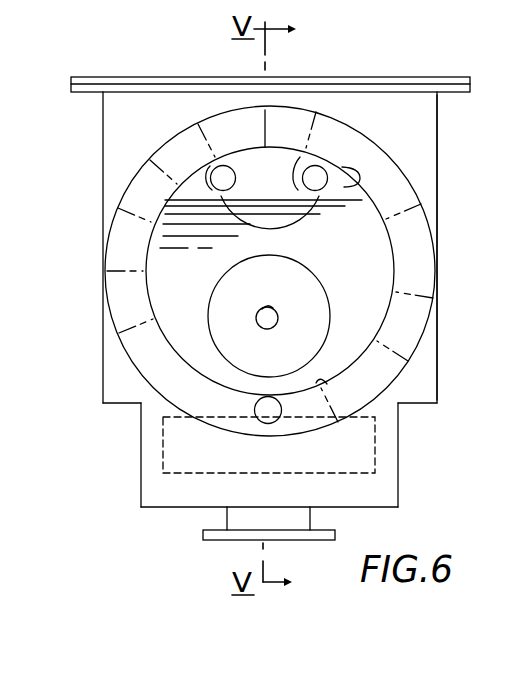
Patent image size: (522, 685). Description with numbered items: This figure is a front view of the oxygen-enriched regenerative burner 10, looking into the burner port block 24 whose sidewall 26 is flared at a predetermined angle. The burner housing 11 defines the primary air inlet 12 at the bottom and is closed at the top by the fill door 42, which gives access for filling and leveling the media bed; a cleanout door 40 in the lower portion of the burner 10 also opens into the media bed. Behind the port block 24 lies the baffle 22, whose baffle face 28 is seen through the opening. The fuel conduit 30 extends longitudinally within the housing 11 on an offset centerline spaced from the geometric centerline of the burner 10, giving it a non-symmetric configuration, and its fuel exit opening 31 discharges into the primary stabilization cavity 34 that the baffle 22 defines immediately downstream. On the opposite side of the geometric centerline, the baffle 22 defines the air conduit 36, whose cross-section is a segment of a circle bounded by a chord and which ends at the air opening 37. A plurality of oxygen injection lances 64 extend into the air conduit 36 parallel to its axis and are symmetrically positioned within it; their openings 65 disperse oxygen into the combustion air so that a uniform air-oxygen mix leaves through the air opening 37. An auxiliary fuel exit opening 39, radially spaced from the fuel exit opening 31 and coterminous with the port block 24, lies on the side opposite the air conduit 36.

The regenerative burner 10 is at (64, 179).
The burner housing 11 is at (438, 108).
The primary air inlet 12 is at (202, 543).
The baffle 22 is at (397, 258).
The burner port block 24 is at (426, 205).
The sidewall 26 is at (399, 199).
The baffle face 28 is at (331, 259).
The fuel conduit 30 is at (279, 327).
The fuel exit opening 31 is at (273, 307).
The primary stabilization cavity 34 is at (327, 384).
The air conduit 36 is at (350, 170).
The air opening 37 is at (276, 185).
The auxiliary fuel exit opening 39 is at (278, 430).
The cleanout door 40 is at (163, 437).
The fill door 42 is at (133, 77).
The oxygen injection lances 64 is at (209, 172).
The openings 65 is at (210, 180).